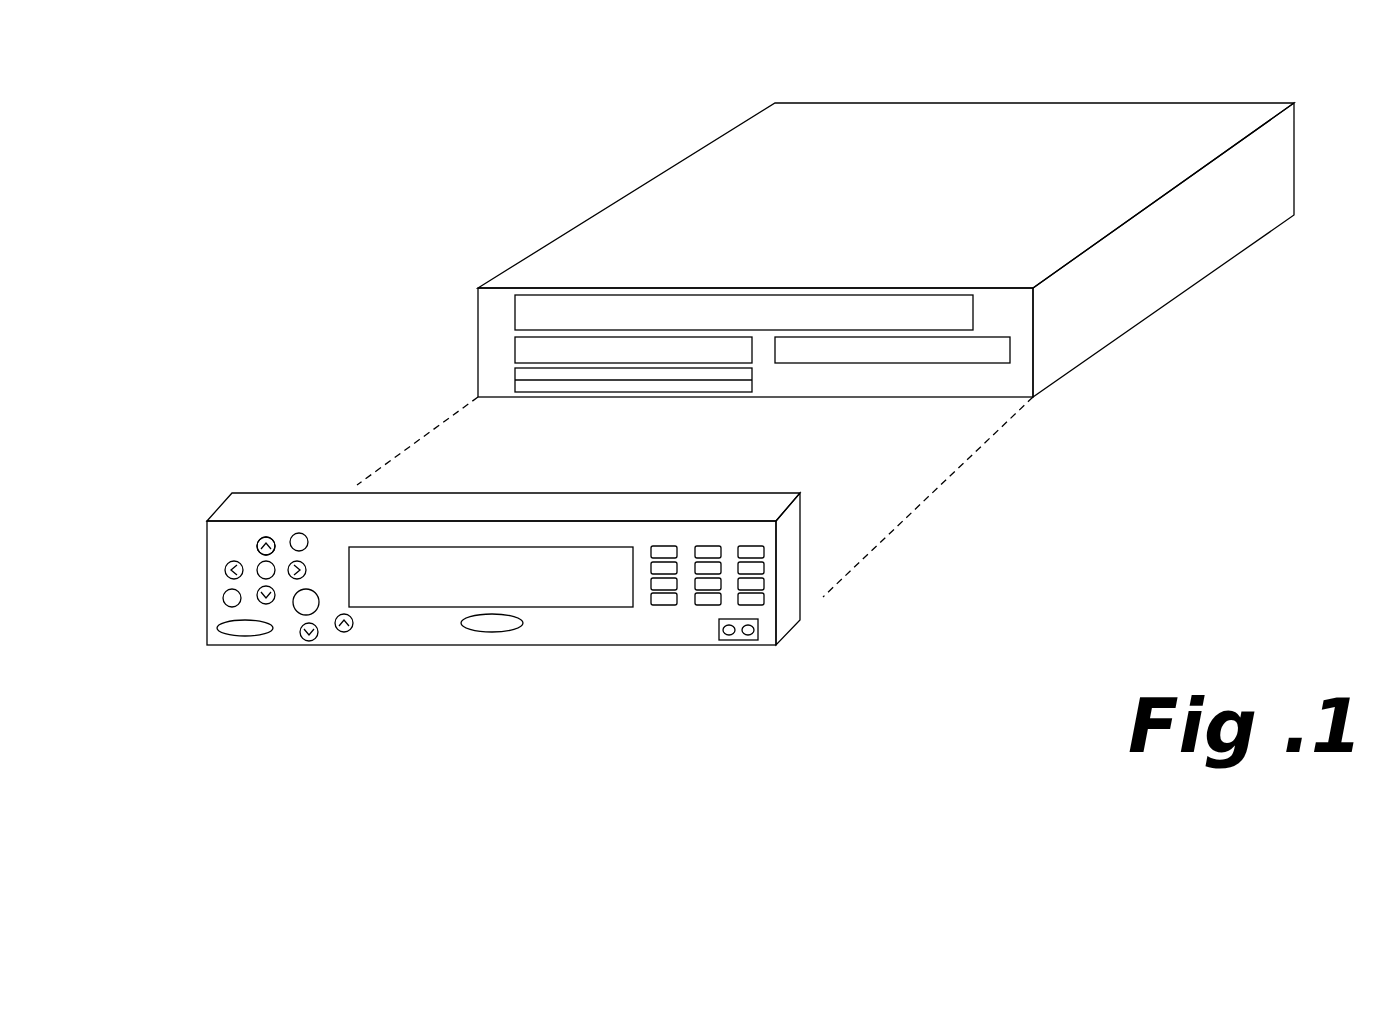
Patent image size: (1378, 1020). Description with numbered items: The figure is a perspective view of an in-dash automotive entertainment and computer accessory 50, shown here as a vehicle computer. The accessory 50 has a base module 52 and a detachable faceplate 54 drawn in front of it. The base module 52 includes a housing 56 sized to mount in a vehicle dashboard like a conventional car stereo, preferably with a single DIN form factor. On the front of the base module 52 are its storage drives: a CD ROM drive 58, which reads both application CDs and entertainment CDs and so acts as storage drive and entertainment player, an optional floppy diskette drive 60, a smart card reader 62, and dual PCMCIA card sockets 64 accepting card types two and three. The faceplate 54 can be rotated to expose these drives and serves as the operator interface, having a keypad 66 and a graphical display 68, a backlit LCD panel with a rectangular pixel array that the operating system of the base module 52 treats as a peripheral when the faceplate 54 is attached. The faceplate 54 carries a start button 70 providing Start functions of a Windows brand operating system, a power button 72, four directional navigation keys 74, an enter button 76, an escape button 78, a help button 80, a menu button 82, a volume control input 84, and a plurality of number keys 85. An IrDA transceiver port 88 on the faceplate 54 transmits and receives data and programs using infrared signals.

The in-dash automotive entertainment and computer accessory 50 is at (370, 145).
The base module 52 is at (828, 350).
The detachable faceplate 54 is at (805, 685).
The housing 56 is at (1187, 310).
The CD ROM drive 58 is at (676, 312).
The floppy diskette drive 60 is at (577, 348).
The smart card reader 62 is at (923, 350).
The dual PCMCIA card sockets 64 is at (646, 392).
The keypad 66 is at (210, 570).
The graphical display 68 is at (595, 549).
The start button 70 is at (490, 633).
The power button 72 is at (245, 637).
The directional navigation keys 74 is at (257, 545).
The enter button 76 is at (258, 575).
The escape button 78 is at (299, 533).
The help button 80 is at (223, 600).
The menu button 82 is at (300, 614).
The volume control input 84 is at (318, 647).
The number keys 85 is at (774, 587).
The IrDA transceiver port 88 is at (743, 640).